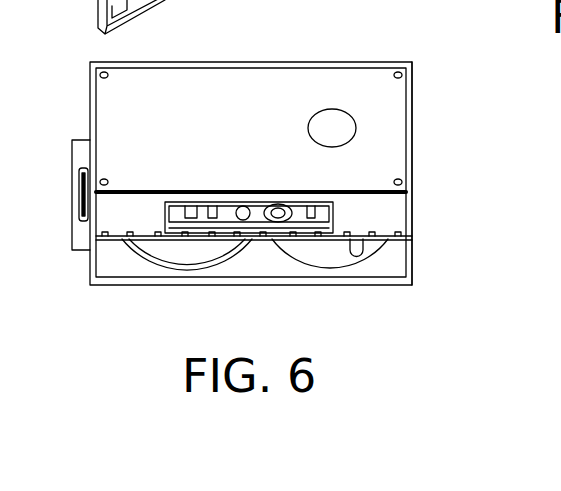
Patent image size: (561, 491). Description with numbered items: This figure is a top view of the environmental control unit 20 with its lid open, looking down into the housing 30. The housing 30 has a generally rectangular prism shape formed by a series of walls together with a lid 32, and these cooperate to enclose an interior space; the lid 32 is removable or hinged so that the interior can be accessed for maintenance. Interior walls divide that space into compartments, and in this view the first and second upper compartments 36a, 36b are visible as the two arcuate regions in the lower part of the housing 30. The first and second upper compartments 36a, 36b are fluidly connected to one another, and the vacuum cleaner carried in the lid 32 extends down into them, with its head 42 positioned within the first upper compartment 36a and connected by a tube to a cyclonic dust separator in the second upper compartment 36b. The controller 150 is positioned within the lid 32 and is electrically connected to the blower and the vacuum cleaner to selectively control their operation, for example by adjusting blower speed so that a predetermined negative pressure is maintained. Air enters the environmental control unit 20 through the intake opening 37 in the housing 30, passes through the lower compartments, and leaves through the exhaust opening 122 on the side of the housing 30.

The environmental control unit 20 is at (427, 192).
The housing 30 is at (357, 54).
The lid 32 is at (413, 112).
The first upper compartment 36a is at (170, 248).
The second upper compartment 36b is at (325, 245).
The intake opening 37 is at (255, 0).
The head 42 is at (352, 241).
The exhaust opening 122 is at (72, 252).
The controller 150 is at (256, 209).